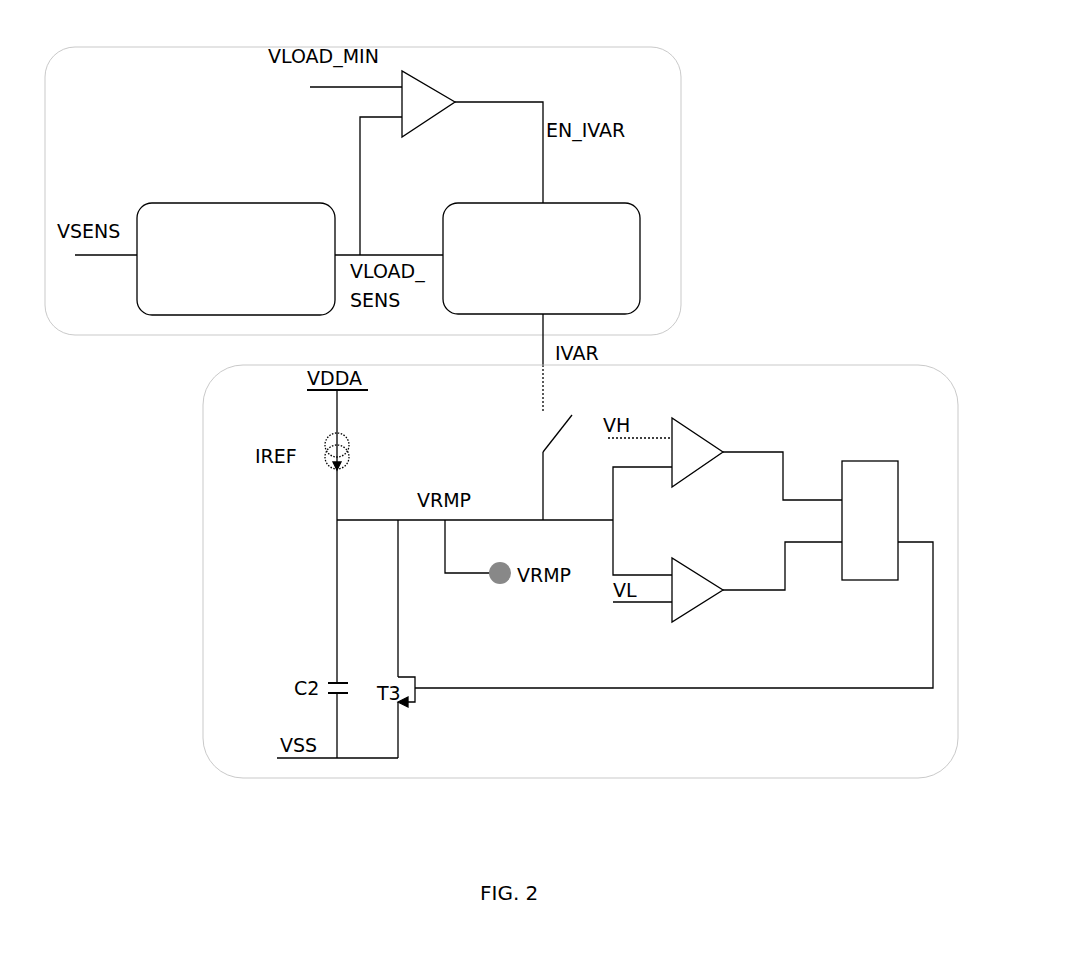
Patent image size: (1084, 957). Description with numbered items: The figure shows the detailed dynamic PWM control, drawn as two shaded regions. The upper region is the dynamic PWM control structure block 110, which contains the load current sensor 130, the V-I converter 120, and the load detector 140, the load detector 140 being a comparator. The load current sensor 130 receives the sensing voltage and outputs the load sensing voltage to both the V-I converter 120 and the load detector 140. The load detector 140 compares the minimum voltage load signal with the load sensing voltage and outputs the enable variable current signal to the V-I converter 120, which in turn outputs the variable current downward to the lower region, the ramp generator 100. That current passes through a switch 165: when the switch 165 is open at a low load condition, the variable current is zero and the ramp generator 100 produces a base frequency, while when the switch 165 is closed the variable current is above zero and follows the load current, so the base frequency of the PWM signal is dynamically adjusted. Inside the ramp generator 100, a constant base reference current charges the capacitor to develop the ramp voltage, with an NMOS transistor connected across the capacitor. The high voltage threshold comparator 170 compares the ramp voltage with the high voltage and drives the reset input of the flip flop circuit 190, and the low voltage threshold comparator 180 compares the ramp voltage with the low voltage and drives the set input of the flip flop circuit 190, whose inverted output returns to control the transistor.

The ramp generator 100 is at (865, 372).
The dynamic PWM control structure block 110 is at (633, 47).
The V-I converter 120 is at (637, 222).
The load current sensor 130 is at (205, 203).
The load detector 140 is at (428, 85).
The switch 165 is at (537, 433).
The high voltage threshold comparator 170 is at (702, 433).
The low voltage threshold comparator 180 is at (697, 572).
The flip flop circuit 190 is at (870, 461).